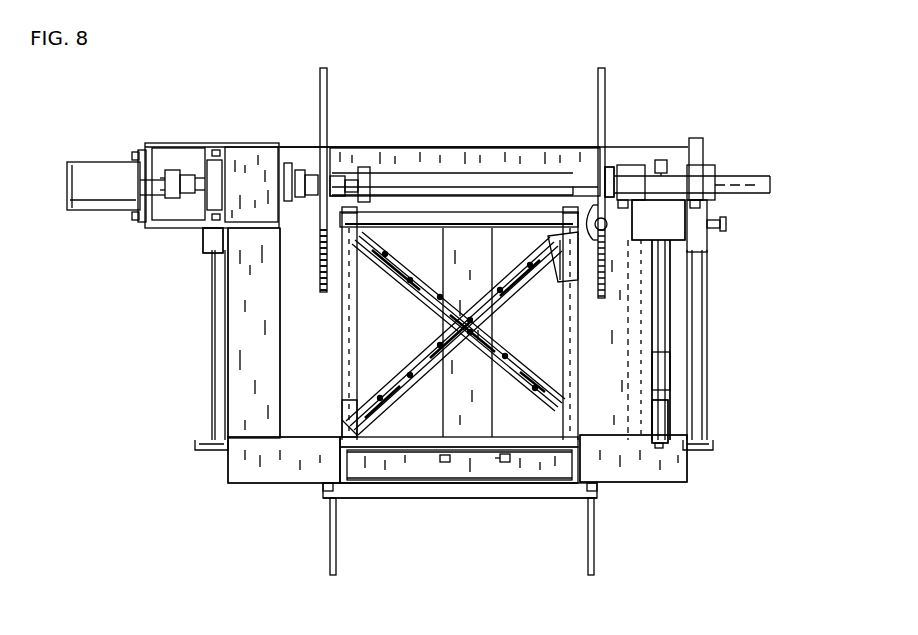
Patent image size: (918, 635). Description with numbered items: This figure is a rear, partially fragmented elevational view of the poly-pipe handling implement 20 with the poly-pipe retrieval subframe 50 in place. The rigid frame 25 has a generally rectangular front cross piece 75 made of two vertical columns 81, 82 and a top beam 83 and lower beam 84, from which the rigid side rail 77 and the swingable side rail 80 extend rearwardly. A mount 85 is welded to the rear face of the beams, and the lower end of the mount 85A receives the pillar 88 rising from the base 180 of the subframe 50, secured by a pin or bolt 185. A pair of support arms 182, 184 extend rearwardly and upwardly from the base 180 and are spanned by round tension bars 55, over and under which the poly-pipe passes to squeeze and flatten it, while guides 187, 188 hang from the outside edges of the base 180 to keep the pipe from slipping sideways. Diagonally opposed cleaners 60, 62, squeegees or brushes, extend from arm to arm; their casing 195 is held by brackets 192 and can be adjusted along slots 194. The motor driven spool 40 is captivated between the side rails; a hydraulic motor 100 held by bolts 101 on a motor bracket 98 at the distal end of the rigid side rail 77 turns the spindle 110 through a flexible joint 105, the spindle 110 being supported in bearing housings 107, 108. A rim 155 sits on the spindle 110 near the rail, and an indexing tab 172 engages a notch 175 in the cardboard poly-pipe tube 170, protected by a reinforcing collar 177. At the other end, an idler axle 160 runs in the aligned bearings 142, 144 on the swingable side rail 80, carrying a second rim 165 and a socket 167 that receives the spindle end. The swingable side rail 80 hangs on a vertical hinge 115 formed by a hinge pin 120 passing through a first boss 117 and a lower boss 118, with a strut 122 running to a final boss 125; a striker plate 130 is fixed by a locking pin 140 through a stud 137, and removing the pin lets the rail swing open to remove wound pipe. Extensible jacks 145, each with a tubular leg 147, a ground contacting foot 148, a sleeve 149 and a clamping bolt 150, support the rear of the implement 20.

The poly-pipe handling implement 20 is at (750, 50).
The rigid frame 25 is at (304, 147).
The motor driven spool 40 is at (488, 115).
The poly-pipe retrieval subframe 50 is at (426, 516).
The tension bars 55 is at (520, 222).
The cleaner 60 is at (450, 358).
The cleaner 62 is at (453, 283).
The front cross piece 75 is at (250, 492).
The rigid side rail 77 is at (248, 212).
The swingable side rail 80 is at (667, 222).
The vertical column 81 is at (670, 295).
The vertical column 82 is at (258, 350).
The top beam 83 is at (400, 160).
The lower beam 84 is at (298, 472).
The mount 85 is at (493, 375).
The lower end of the mount 85A is at (453, 467).
The pillar 88 is at (477, 487).
The motor bracket 98 is at (172, 143).
The motor 100 is at (93, 198).
The bolts 101 is at (136, 153).
The flexible joint 105 is at (188, 168).
The bearing housing 107 is at (210, 209).
The bearing housing 108 is at (293, 165).
The spindle 110 is at (312, 167).
The vertical hinge 115 is at (647, 335).
The first hinge boss 117 is at (697, 162).
The lower hinge boss 118 is at (665, 418).
The hinge pin 120 is at (660, 158).
The strut 122 is at (660, 328).
The final boss 125 is at (668, 388).
The striker plate 130 is at (640, 242).
The stud 137 is at (604, 230).
The locking pin 140 is at (627, 240).
The bearing 142 is at (700, 175).
The bearing 144 is at (627, 167).
The extensible jacks 145 is at (186, 259).
The tubular legs 147 is at (212, 397).
The ground contacting foot 148 is at (200, 457).
The sleeves 149 is at (212, 250).
The bolts 150 is at (726, 224).
The rim 155 is at (327, 282).
The idler axle 160 is at (772, 188).
The second rim 165 is at (602, 72).
The socket 167 is at (607, 167).
The poly-pipe tube 170 is at (530, 180).
The indexing tab 172 is at (338, 168).
The notch 175 is at (336, 165).
The reinforcing collar 177 is at (378, 187).
The base 180 is at (522, 497).
The support arm 182 is at (582, 437).
The support arm 184 is at (342, 357).
The pin or bolt 185 is at (508, 470).
The guide 187 is at (337, 562).
The guide 188 is at (594, 573).
The brackets 192 is at (562, 283).
The slots 194 is at (550, 265).
The casing 195 is at (452, 470).